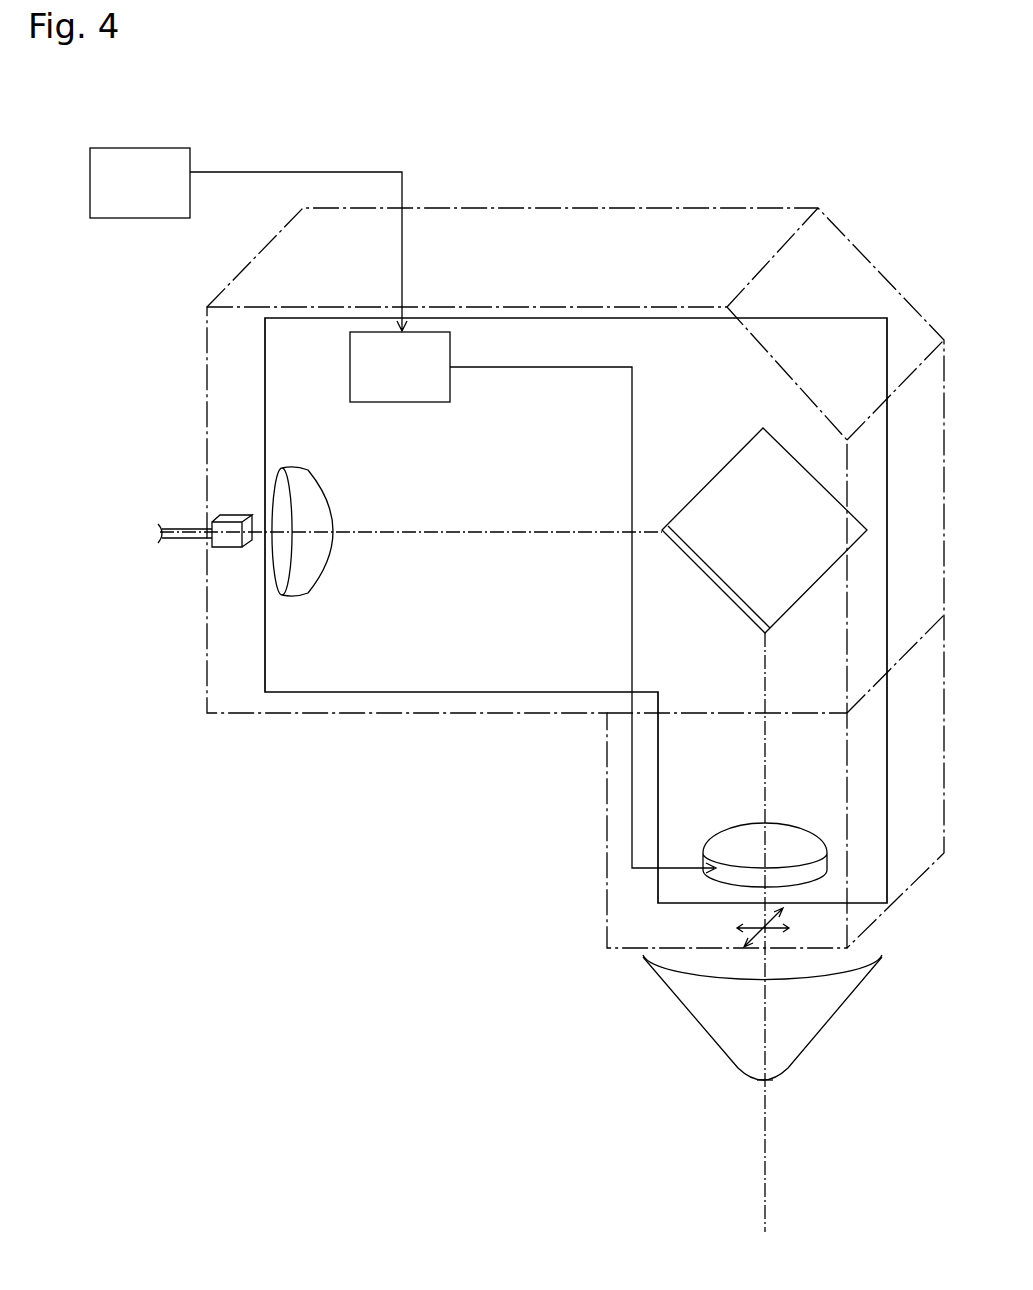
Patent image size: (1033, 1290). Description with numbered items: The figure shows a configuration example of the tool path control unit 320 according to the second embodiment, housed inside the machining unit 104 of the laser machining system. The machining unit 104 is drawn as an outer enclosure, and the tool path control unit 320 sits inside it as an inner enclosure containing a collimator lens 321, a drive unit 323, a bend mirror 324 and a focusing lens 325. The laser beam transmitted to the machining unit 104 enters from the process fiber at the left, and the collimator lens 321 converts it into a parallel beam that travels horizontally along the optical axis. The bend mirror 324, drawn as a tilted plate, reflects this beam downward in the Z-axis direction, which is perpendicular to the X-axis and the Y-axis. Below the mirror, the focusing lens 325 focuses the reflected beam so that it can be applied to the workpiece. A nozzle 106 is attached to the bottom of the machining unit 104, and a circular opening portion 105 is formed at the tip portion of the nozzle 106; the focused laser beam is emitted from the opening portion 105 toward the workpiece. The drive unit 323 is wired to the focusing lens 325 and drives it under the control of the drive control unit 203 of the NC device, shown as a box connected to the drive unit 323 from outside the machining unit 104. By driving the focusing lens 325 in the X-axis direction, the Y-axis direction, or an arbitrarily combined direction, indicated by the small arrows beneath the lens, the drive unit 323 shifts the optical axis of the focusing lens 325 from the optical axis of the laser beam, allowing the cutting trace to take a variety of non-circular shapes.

The machining unit 104 is at (753, 250).
The drive control unit 203 is at (147, 148).
The tool path control unit 320 is at (392, 694).
The collimator lens 321 is at (296, 468).
The drive unit 323 is at (394, 403).
The bend mirror 324 is at (752, 456).
The focusing lens 325 is at (808, 836).
The nozzle 106 is at (843, 1001).
The opening portion 105 is at (770, 1082).